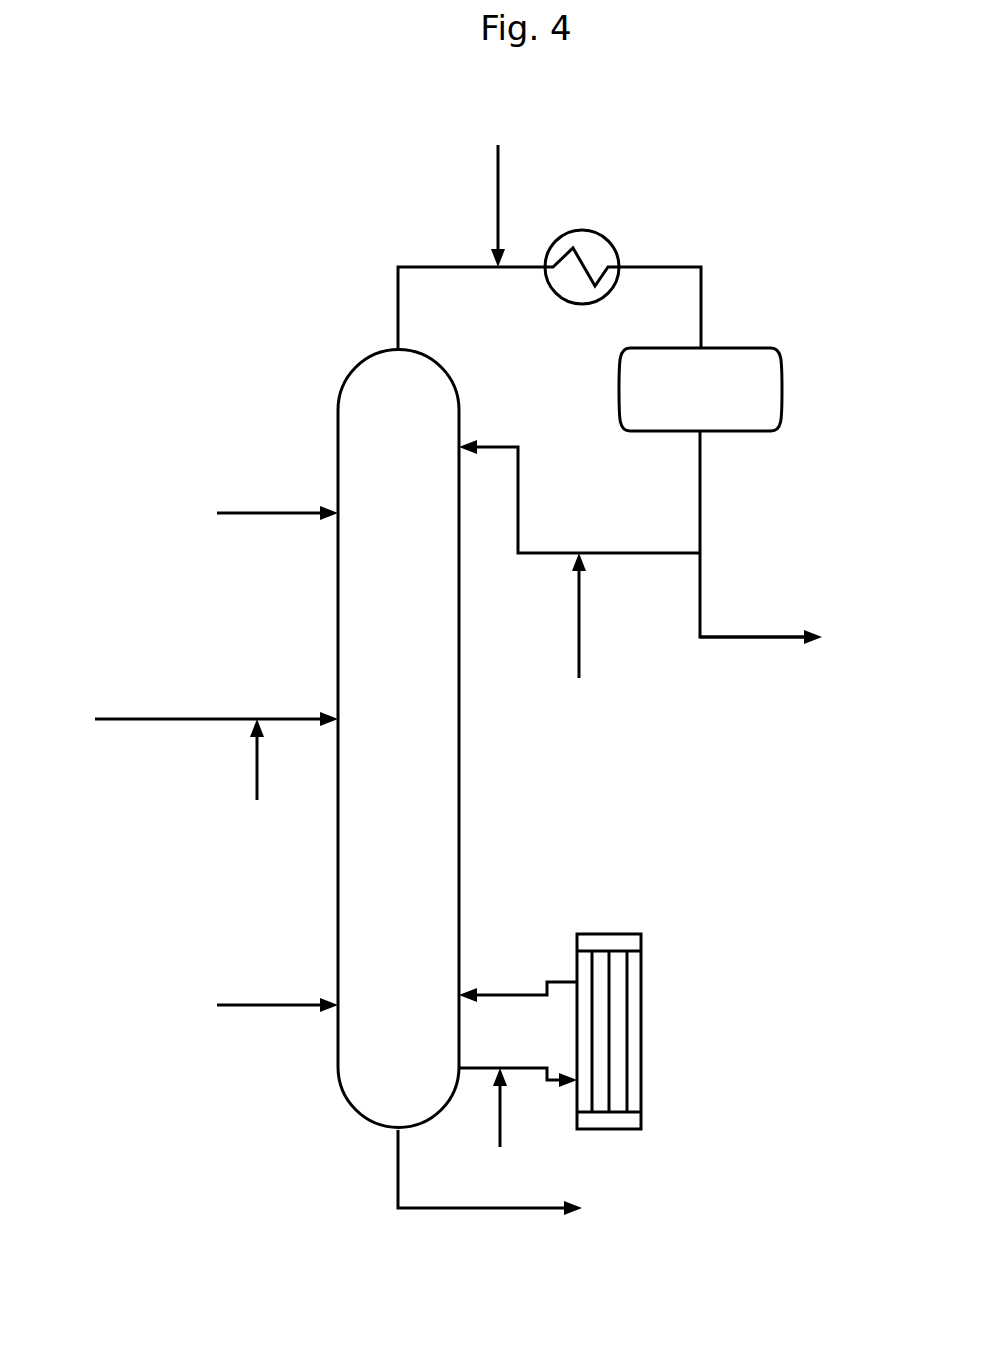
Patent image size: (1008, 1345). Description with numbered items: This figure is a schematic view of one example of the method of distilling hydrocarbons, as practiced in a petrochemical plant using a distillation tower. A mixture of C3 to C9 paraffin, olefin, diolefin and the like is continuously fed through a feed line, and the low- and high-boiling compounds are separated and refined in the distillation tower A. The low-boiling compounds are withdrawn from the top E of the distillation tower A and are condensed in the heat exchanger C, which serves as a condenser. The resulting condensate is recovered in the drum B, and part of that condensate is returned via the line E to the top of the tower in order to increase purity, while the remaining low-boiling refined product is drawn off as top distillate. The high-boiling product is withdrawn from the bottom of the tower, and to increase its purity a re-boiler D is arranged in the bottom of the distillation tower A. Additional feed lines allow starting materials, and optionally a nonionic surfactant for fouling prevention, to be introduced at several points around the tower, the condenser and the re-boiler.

The distillation tower A is at (453, 739).
The drum B is at (803, 388).
The heat exchanger (condenser) C is at (578, 210).
The re-boiler D is at (663, 1030).
The top of the distillation tower / return line E is at (378, 318).